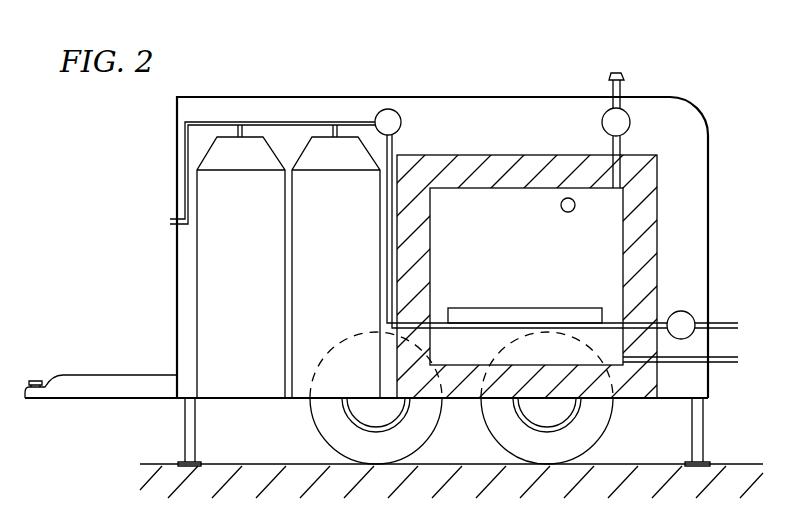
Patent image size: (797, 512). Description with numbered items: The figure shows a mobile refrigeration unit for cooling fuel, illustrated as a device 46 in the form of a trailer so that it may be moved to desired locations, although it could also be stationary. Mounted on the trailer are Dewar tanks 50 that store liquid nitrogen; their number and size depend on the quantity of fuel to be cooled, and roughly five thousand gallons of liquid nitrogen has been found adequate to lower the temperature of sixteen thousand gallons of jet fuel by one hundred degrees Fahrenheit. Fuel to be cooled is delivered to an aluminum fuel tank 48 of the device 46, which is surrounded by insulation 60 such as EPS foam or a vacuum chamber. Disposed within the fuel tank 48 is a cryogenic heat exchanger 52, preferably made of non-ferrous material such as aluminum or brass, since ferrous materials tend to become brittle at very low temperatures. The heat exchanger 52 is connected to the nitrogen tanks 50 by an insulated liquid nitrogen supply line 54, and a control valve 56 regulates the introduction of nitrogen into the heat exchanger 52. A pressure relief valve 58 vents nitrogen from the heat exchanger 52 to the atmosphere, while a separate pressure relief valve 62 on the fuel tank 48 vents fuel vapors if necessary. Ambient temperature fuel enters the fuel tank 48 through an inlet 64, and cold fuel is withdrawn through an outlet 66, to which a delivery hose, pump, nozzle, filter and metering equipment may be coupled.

The device 46 is at (514, 92).
The fuel tank 48 is at (622, 233).
The Dewar tanks 50 is at (200, 273).
The cryogenic heat exchanger 52 is at (497, 309).
The insulated liquid nitrogen supply line 54 is at (393, 147).
The control valve 56 is at (396, 109).
The pressure relief valve 58 is at (684, 310).
The insulation 60 is at (425, 252).
The pressure relief valve 62 is at (630, 121).
The inlet 64 is at (565, 212).
The outlet 66 is at (722, 363).